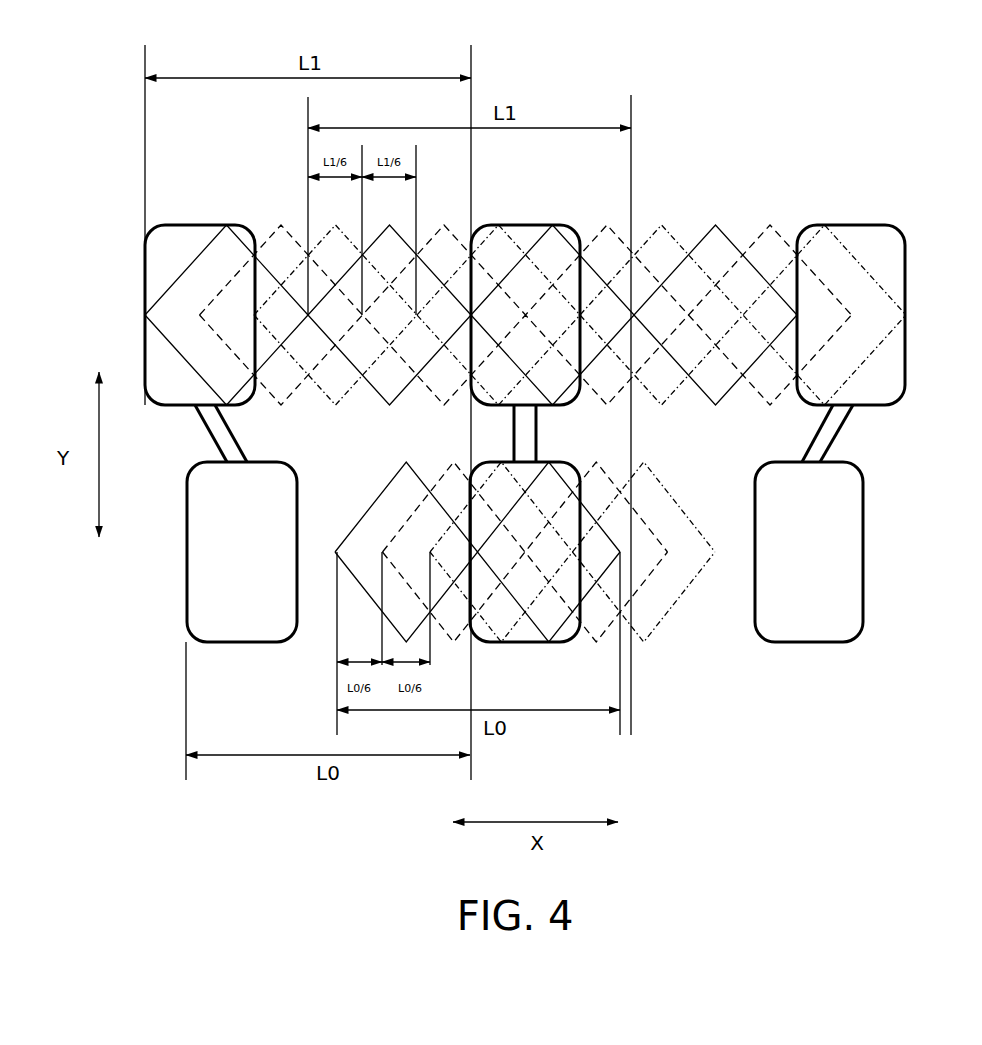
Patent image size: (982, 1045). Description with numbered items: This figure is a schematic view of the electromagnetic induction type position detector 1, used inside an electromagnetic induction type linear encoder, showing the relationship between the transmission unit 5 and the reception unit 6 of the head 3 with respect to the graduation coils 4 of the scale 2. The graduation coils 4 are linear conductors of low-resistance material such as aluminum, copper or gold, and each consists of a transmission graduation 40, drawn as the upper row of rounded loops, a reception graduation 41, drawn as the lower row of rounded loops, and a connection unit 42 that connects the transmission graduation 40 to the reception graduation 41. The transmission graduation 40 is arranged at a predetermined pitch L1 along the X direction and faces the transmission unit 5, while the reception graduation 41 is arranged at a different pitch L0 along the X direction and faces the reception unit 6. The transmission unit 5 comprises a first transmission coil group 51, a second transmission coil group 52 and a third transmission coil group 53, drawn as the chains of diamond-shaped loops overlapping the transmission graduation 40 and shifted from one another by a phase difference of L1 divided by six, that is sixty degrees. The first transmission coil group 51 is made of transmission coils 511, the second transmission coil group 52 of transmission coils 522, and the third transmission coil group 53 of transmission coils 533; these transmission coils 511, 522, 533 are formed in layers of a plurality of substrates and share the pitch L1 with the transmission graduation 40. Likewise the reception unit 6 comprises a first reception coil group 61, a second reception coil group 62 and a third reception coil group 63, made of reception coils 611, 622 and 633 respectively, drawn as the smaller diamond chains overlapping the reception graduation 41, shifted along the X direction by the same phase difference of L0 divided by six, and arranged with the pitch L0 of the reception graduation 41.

The electromagnetic induction type position detector 1 is at (915, 92).
The scale 2 is at (125, 336).
The head 3 is at (812, 148).
The graduation coils 4 is at (930, 312).
The transmission unit 5 is at (748, 148).
The reception unit 6 is at (700, 630).
The transmission graduation 40 is at (205, 225).
The reception graduation 41 is at (252, 642).
The connection unit 42 is at (224, 418).
The first transmission coil group 51 is at (738, 222).
The second transmission coil group 52 is at (276, 220).
The third transmission coil group 53 is at (686, 215).
The transmission coils 511 is at (390, 405).
The transmission coils 522 is at (444, 405).
The transmission coils 533 is at (662, 405).
The first reception coil group 61 is at (352, 510).
The second reception coil group 62 is at (614, 468).
The third reception coil group 63 is at (697, 503).
The reception coils 611 is at (378, 494).
The reception coils 622 is at (597, 644).
The reception coils 633 is at (645, 645).